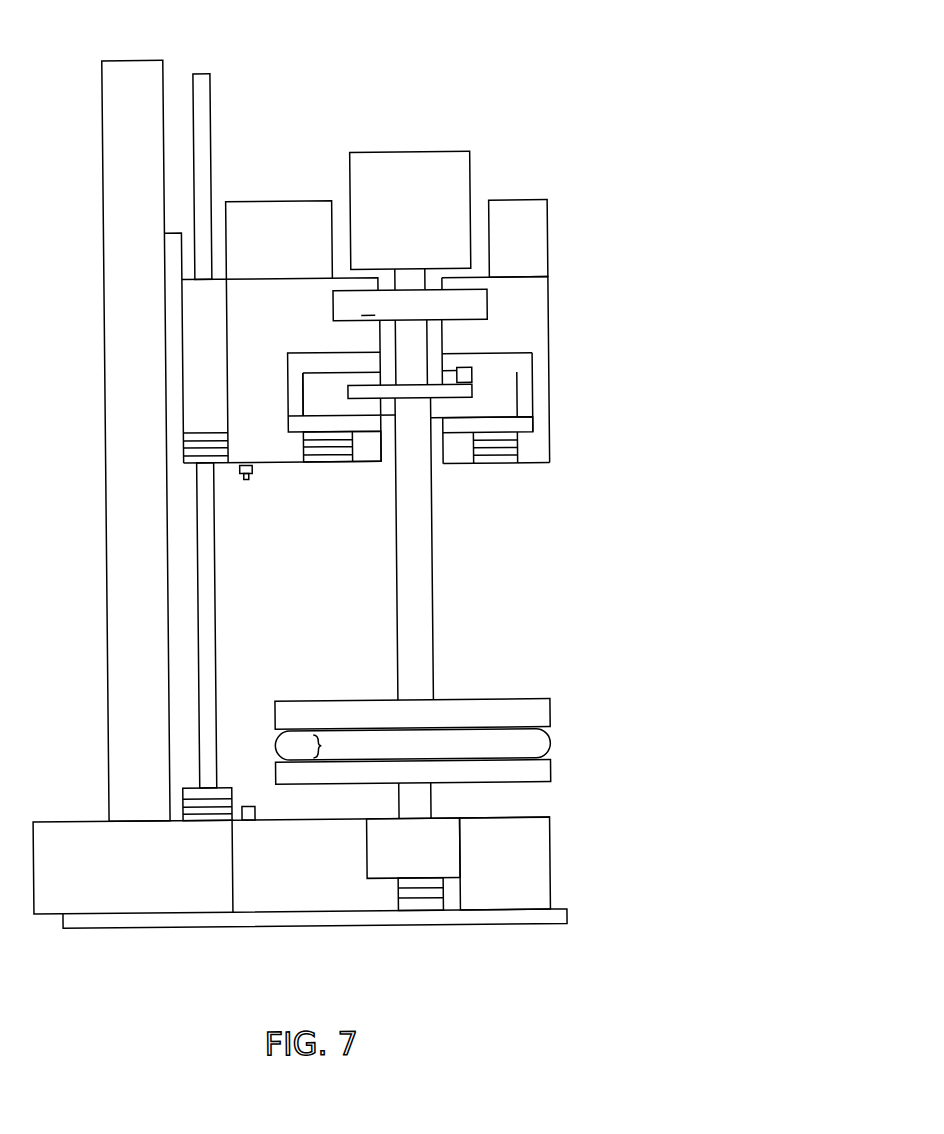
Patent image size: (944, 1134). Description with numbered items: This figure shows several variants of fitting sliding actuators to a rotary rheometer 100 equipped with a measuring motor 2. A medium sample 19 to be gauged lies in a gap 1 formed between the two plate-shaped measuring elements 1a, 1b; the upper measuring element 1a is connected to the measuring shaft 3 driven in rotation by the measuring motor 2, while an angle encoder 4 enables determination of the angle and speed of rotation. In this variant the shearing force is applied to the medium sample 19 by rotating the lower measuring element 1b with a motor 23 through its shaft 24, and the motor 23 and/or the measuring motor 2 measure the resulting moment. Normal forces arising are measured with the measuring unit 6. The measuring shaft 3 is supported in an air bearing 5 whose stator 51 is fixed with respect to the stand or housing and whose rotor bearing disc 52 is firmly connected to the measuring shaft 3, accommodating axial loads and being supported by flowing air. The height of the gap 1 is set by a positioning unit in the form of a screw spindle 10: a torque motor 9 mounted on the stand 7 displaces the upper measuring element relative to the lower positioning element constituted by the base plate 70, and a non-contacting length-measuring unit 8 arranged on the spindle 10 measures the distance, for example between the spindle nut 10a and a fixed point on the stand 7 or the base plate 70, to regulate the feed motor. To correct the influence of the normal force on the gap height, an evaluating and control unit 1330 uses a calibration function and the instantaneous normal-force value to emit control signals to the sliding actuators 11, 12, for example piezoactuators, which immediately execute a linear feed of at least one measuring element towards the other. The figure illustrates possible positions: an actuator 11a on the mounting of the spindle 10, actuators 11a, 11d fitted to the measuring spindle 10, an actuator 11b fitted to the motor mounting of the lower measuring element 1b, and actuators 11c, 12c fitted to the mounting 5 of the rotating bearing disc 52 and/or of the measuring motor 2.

The rotary rheometer 100 is at (344, 102).
The screw spindle 10 is at (214, 105).
The spindle nut 10a is at (203, 383).
The measuring motor 2 is at (422, 176).
The stand 7 is at (106, 288).
The angle encoder 4 is at (470, 304).
The measuring unit 6 is at (497, 355).
The stator 51 is at (343, 364).
The evaluating and control unit 1330 is at (473, 374).
The air bearing 5 is at (506, 400).
The bearing disc 52 is at (524, 425).
The actuator 11c is at (498, 465).
The sliding actuator 11 is at (513, 409).
The actuator 11d is at (190, 439).
The length-measuring unit 8 is at (250, 476).
The actuator 12c is at (324, 475).
The sliding actuator 12 is at (457, 431).
The measuring shaft 3 is at (406, 645).
The upper measuring element 1a is at (350, 710).
The gap 1 is at (448, 719).
The medium sample 19 is at (542, 746).
The lower measuring element 1b is at (539, 774).
The shaft 24 is at (419, 799).
The actuator 11a is at (188, 792).
The torque motor 9 is at (60, 826).
The base plate 70 is at (529, 850).
The motor 23 is at (382, 866).
The actuator 11b is at (414, 906).